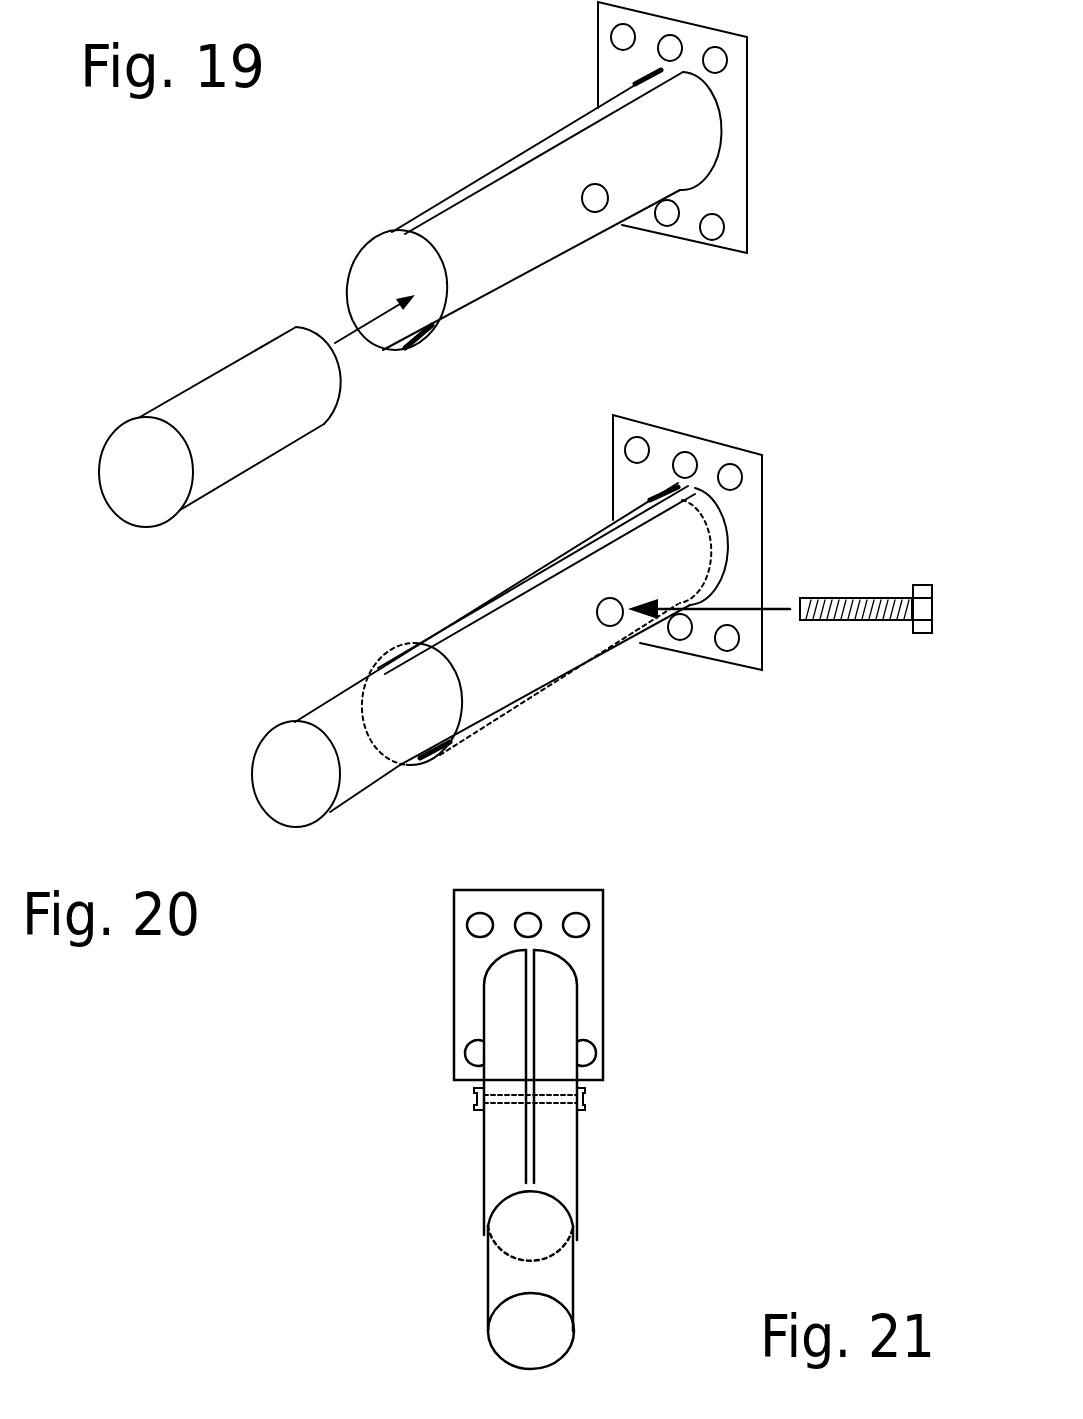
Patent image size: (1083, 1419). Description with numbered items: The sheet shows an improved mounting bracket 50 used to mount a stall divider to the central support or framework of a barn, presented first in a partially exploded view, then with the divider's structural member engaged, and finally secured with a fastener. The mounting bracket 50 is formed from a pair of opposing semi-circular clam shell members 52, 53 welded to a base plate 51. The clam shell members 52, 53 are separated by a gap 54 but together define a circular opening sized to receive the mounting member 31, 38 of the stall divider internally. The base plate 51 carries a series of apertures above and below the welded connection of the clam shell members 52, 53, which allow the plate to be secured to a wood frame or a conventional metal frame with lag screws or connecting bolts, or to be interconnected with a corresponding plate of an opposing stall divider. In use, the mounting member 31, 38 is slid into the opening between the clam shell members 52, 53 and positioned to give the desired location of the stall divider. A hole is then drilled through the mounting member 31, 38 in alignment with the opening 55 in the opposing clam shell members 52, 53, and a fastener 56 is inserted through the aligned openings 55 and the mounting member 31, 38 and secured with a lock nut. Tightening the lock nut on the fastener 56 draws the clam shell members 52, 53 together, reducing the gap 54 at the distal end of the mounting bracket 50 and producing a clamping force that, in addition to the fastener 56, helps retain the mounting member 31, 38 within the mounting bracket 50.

In FIG. 19, the mounting member 31 is at (220, 411).
In FIG. 20, the mounting member 31 is at (232, 752).
In FIG. 21, the mounting member 31 is at (425, 1280).
In FIG. 19, the mounting member 38 is at (222, 392).
In FIG. 20, the mounting member 38 is at (306, 762).
In FIG. 21, the mounting member 38 is at (500, 1292).
In FIG. 19, the mounting bracket 50 is at (213, 184).
In FIG. 21, the mounting bracket 50 is at (716, 948).
In FIG. 19, the base plate 51 is at (733, 195).
In FIG. 20, the base plate 51 is at (733, 513).
In FIG. 21, the base plate 51 is at (462, 993).
In FIG. 19, the clam shell member 52 is at (375, 262).
In FIG. 20, the clam shell member 52 is at (372, 670).
In FIG. 21, the clam shell member 52 is at (493, 1138).
In FIG. 19, the clam shell member 53 is at (487, 262).
In FIG. 20, the clam shell member 53 is at (487, 690).
In FIG. 21, the clam shell member 53 is at (558, 1162).
In FIG. 19, the gap 54 is at (500, 178).
In FIG. 20, the gap 54 is at (536, 580).
In FIG. 21, the gap 54 is at (530, 1167).
In FIG. 19, the opening 55 is at (597, 212).
In FIG. 20, the opening 55 is at (612, 626).
In FIG. 20, the fastener 56 is at (830, 622).
In FIG. 21, the fastener 56 is at (587, 1097).